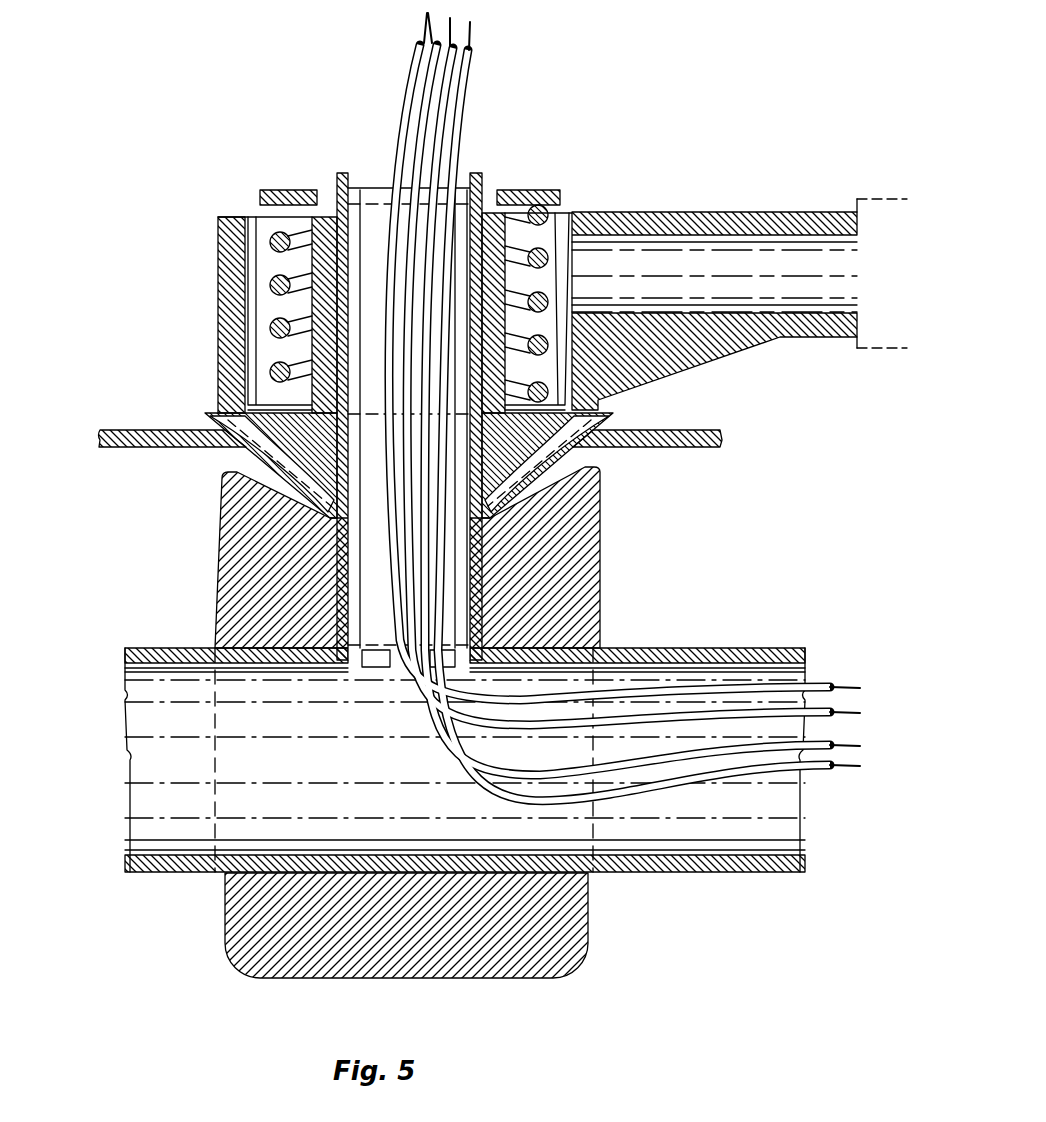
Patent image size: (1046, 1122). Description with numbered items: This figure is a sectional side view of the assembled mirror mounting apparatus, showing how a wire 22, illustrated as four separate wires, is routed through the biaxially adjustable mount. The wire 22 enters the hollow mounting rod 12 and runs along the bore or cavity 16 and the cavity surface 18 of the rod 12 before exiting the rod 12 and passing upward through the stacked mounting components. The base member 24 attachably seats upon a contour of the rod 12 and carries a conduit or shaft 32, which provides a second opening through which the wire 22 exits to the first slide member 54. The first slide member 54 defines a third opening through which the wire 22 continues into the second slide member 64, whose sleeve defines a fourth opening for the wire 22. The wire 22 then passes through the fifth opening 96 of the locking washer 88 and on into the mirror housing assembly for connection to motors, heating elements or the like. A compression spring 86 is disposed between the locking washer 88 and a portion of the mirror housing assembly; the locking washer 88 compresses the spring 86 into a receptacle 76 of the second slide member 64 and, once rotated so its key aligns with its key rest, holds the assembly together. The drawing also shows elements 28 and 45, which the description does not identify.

The mounting rod 12 is at (172, 865).
The bore or cavity 16 is at (146, 750).
The cavity surface 18 is at (167, 667).
The wire 22 is at (457, 90).
The base member 24 is at (218, 538).
The lower nut block 28 is at (580, 912).
The conduit or shaft 32 is at (590, 458).
The mounting plate 45 is at (132, 432).
The first slide member 54 is at (600, 425).
The second slide member 64 is at (227, 335).
The receptacle 76 is at (252, 277).
The compression spring 86 is at (267, 232).
The locking washer 88 is at (282, 190).
The fifth opening 96 is at (370, 173).